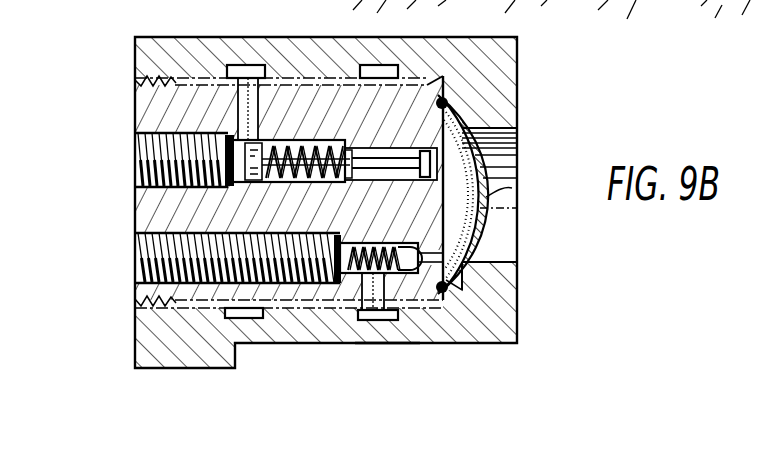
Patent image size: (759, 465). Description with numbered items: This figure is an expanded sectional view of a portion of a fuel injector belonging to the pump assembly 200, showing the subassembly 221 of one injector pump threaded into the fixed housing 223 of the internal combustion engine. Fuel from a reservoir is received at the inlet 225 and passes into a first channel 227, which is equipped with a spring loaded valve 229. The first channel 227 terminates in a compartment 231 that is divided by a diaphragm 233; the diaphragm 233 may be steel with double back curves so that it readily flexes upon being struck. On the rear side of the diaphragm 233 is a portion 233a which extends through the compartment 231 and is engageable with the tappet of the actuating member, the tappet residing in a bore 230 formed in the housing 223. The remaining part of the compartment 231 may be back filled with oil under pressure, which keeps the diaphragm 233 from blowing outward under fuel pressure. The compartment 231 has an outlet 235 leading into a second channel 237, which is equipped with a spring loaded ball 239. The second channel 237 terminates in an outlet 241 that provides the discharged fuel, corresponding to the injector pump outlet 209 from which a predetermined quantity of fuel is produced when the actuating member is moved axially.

The pump assembly 200 is at (682, 12).
The outlet 209 is at (382, 325).
The subassembly 221 is at (150, 207).
The housing 223 is at (325, 50).
The inlet 225 is at (252, 78).
The first channel 227 is at (340, 128).
The spring loaded valve 229 is at (406, 138).
The bore 230 is at (518, 146).
The compartment 231 is at (448, 207).
The diaphragm 233 is at (472, 222).
The portion 233a is at (495, 195).
The outlet 235 is at (438, 280).
The second channel 237 is at (392, 237).
The spring loaded ball 239 is at (394, 240).
The outlet 241 is at (360, 306).